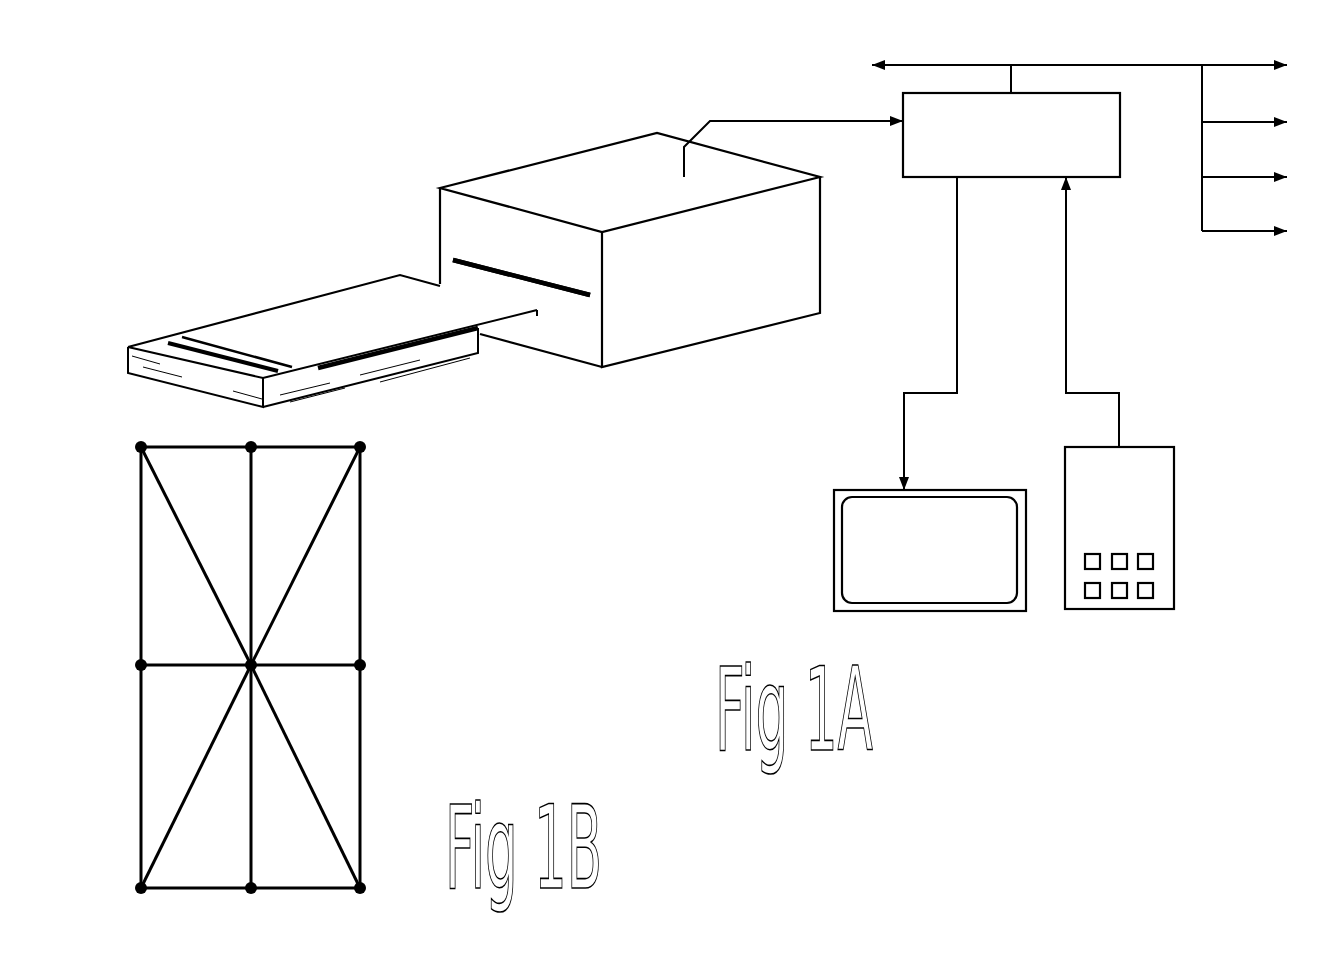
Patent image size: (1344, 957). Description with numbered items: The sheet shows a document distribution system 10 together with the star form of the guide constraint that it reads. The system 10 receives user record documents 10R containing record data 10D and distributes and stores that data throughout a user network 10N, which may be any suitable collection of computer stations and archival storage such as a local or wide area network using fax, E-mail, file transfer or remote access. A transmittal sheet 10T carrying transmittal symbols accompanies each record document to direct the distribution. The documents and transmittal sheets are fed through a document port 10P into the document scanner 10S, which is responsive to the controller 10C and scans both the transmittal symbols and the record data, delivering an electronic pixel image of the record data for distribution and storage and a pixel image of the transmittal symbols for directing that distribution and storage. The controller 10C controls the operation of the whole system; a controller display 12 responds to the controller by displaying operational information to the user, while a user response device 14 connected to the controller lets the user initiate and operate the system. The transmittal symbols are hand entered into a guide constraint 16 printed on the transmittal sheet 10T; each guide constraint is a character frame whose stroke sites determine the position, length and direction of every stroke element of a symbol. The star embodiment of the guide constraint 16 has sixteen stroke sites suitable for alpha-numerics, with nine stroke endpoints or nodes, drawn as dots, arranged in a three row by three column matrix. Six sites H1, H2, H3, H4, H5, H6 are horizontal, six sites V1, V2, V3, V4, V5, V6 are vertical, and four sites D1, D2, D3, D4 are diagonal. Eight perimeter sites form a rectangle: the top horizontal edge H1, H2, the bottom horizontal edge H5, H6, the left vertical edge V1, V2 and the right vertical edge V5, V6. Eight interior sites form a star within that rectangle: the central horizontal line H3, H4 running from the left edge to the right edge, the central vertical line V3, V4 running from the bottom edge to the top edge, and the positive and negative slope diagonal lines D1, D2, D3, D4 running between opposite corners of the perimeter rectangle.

In FIG. 1A, the document distribution system 10 is at (690, 537).
In FIG. 1A, the document scanner 10S is at (630, 250).
In FIG. 1A, the document port 10P is at (480, 257).
In FIG. 1A, the transmittal sheet 10T is at (245, 327).
In FIG. 1A, the record data 10D is at (182, 340).
In FIG. 1A, the user record documents 10R is at (130, 357).
In FIG. 1A, the controller 10C is at (1011, 135).
In FIG. 1A, the user network 10N is at (1244, 107).
In FIG. 1A, the controller display 12 is at (930, 550).
In FIG. 1A, the user response device 14 is at (1119, 528).
In FIG. 1B, the guide constraint 16 is at (447, 482).
In FIG. 1B, the horizontal stroke site H1 is at (190, 453).
In FIG. 1B, the horizontal stroke site H2 is at (313, 453).
In FIG. 1B, the horizontal stroke site H3 is at (173, 666).
In FIG. 1B, the horizontal stroke site H4 is at (328, 668).
In FIG. 1B, the horizontal stroke site H5 is at (192, 883).
In FIG. 1B, the horizontal stroke site H6 is at (315, 883).
In FIG. 1B, the vertical stroke site V1 is at (138, 547).
In FIG. 1B, the vertical stroke site V2 is at (138, 822).
In FIG. 1B, the vertical stroke site V3 is at (255, 547).
In FIG. 1B, the vertical stroke site V4 is at (255, 822).
In FIG. 1B, the vertical stroke site V5 is at (365, 547).
In FIG. 1B, the vertical stroke site V6 is at (365, 822).
In FIG. 1B, the diagonal stroke site D1 is at (218, 608).
In FIG. 1B, the diagonal stroke site D2 is at (217, 730).
In FIG. 1B, the diagonal stroke site D3 is at (282, 725).
In FIG. 1B, the diagonal stroke site D4 is at (280, 608).